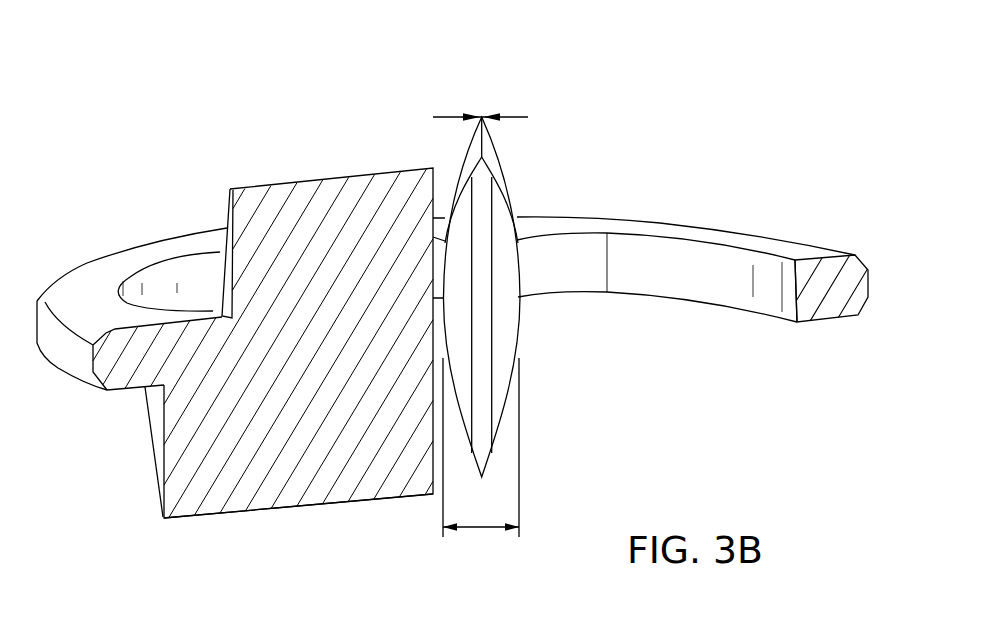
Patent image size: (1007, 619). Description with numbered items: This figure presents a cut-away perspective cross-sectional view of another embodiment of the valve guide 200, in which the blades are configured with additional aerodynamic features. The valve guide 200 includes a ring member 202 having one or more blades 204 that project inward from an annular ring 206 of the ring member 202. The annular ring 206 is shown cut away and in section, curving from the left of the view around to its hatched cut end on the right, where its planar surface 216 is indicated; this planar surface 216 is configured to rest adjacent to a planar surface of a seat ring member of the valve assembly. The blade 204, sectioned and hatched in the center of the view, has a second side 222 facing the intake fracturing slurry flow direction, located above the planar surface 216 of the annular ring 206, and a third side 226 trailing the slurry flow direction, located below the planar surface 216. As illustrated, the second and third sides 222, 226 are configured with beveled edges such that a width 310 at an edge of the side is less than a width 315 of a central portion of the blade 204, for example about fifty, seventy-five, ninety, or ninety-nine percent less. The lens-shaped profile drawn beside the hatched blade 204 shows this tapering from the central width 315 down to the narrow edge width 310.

The valve guide 200 is at (157, 84).
The ring member 202 is at (714, 175).
The blade 204 is at (492, 79).
The annular ring 206 is at (100, 268).
The planar surface 216 is at (823, 322).
The second side 222 is at (288, 183).
The third side 226 is at (263, 508).
The width at an edge of the side 310 is at (445, 117).
The width of a central portion of the blade 315 is at (481, 528).